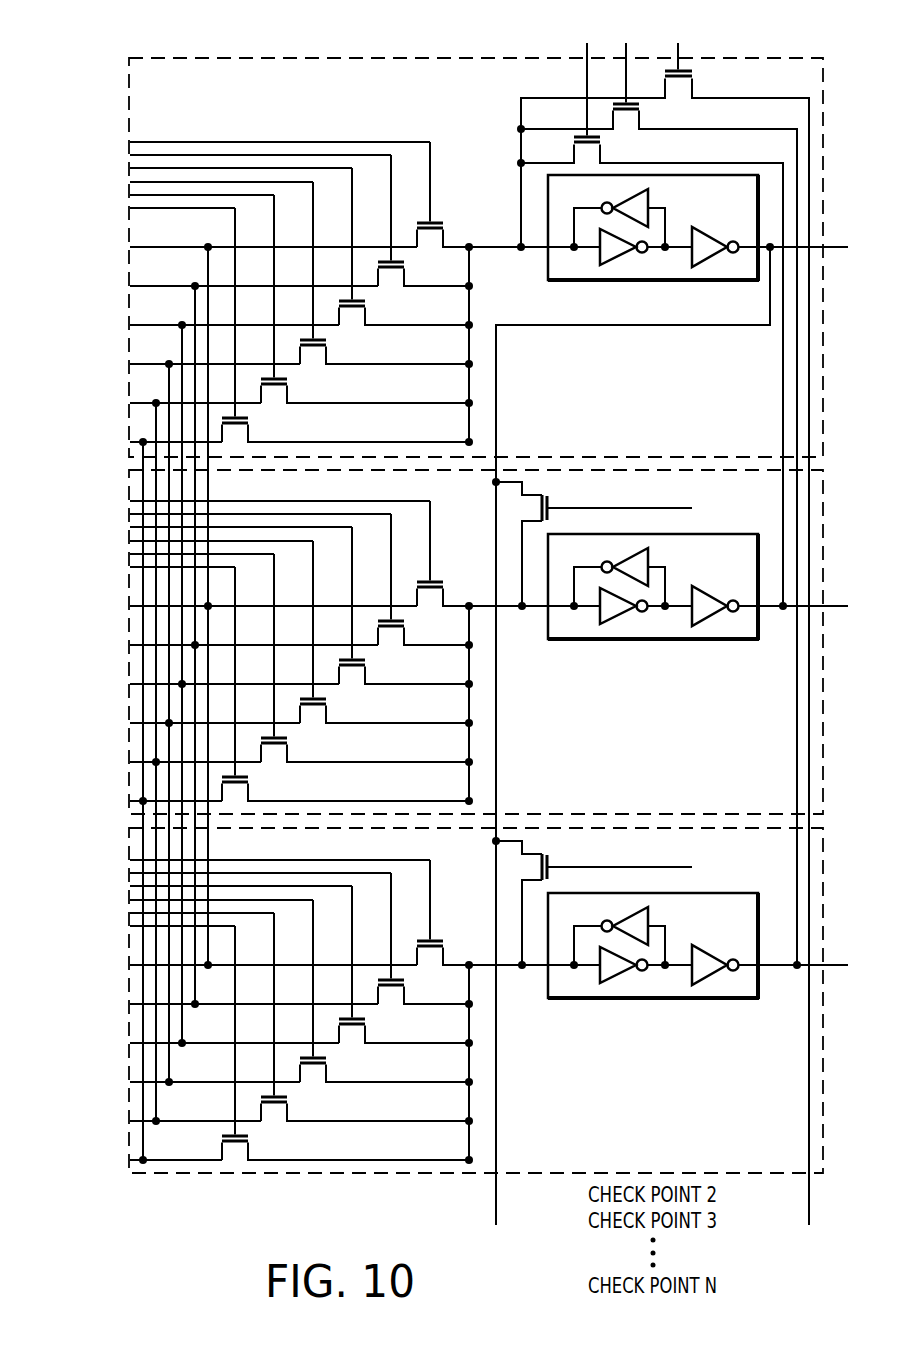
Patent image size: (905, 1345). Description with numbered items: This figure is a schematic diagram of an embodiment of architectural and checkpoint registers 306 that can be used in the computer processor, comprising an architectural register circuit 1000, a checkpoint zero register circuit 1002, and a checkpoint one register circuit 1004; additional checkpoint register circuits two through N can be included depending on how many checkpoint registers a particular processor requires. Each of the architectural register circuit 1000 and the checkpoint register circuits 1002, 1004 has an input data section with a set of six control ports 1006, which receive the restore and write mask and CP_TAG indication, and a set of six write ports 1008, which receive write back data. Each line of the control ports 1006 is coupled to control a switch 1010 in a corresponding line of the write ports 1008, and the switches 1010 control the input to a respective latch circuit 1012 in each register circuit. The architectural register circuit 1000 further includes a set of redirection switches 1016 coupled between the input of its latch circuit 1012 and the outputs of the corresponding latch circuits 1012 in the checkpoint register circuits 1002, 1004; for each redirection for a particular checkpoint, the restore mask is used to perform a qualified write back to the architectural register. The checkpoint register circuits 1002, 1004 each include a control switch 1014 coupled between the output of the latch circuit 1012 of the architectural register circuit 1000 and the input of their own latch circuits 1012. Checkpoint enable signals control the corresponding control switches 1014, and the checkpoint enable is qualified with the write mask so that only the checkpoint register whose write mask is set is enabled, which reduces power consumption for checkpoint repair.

The architectural and checkpoint registers 306 is at (103, 46).
The architectural register circuit 1000 is at (751, 434).
The checkpoint 0 register circuit 1002 is at (751, 795).
The checkpoint 1 register circuit 1004 is at (751, 1122).
The control ports 1006 is at (112, 137).
The write ports 1008 is at (112, 1167).
The switch 1010 is at (457, 209).
The latch circuit 1012 is at (582, 282).
The control switch 1014 is at (537, 512).
The redirection switches 1016 is at (700, 88).